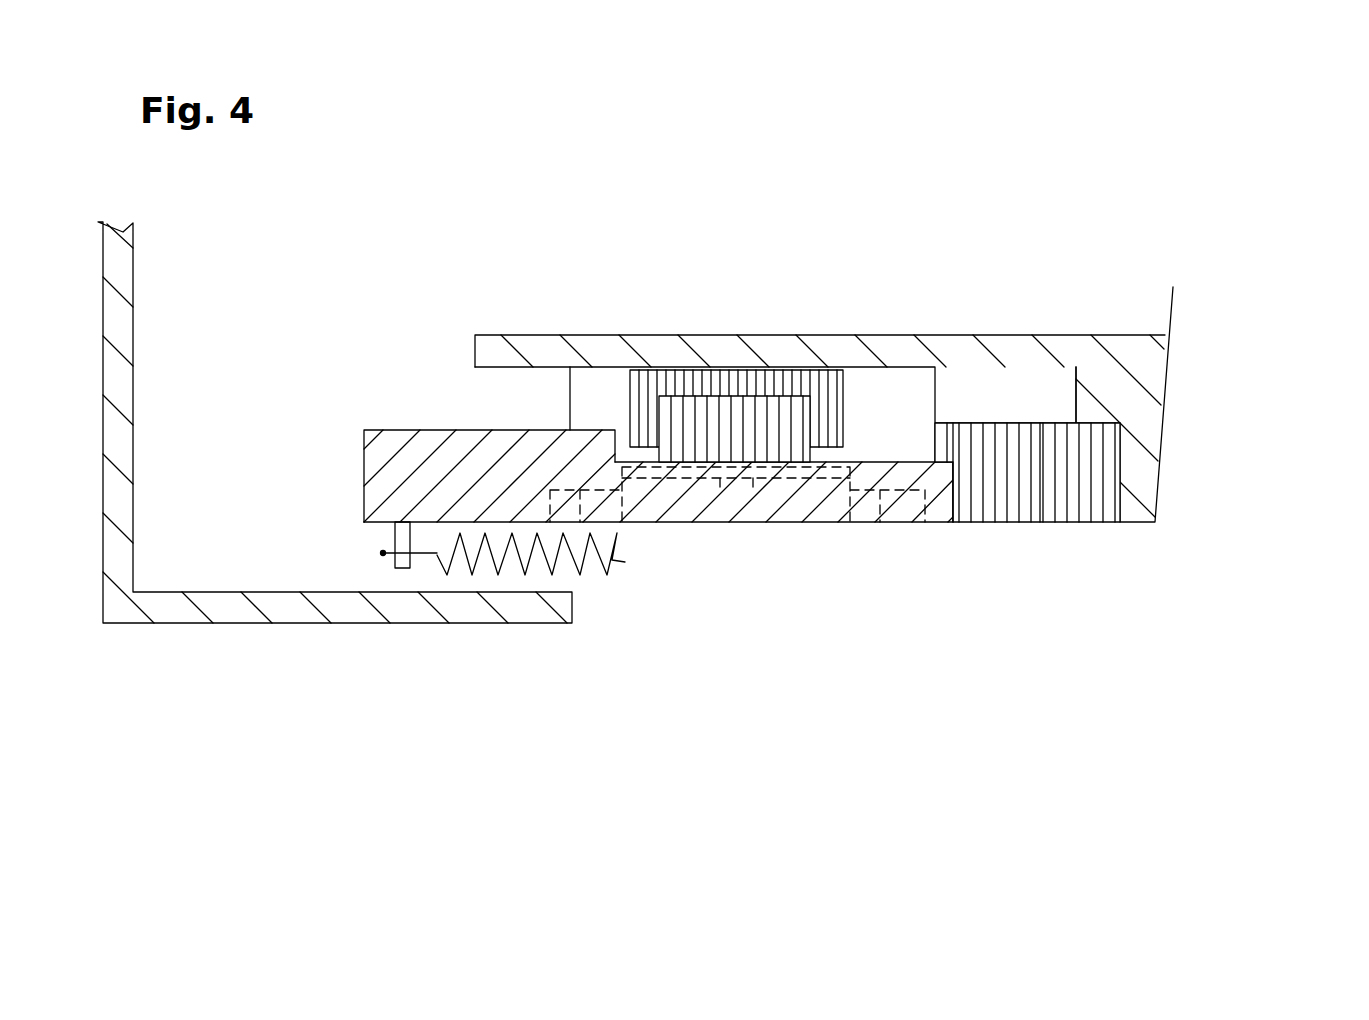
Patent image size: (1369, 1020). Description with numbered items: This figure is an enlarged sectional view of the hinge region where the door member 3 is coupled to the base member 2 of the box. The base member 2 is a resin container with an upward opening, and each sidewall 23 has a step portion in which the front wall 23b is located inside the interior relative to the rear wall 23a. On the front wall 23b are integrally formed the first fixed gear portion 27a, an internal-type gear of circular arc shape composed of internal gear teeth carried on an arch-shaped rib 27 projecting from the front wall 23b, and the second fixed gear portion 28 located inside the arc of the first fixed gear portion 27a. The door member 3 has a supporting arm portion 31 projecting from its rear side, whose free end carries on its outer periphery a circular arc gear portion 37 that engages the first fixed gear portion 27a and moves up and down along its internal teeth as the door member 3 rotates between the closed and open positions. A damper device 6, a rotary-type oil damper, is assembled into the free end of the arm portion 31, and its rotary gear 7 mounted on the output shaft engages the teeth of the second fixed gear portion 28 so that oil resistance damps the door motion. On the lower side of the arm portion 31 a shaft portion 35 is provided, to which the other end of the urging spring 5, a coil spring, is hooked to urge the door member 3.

The base member 2 is at (1010, 333).
The door member 3 is at (463, 401).
The supporting arm portion 31 is at (382, 428).
The urging spring 5 is at (615, 575).
The damper device 6 is at (773, 522).
The rotary gear 7 is at (782, 400).
The second fixed gear portion 28 is at (626, 402).
The rib 27 is at (1138, 480).
The first fixed gear portion 27a is at (1058, 518).
The circular arc gear portion 37 is at (958, 522).
The shaft portion 35 is at (393, 540).
The sidewall 23 is at (720, 505).
The rear wall 23a is at (278, 625).
The front wall 23b is at (1160, 373).